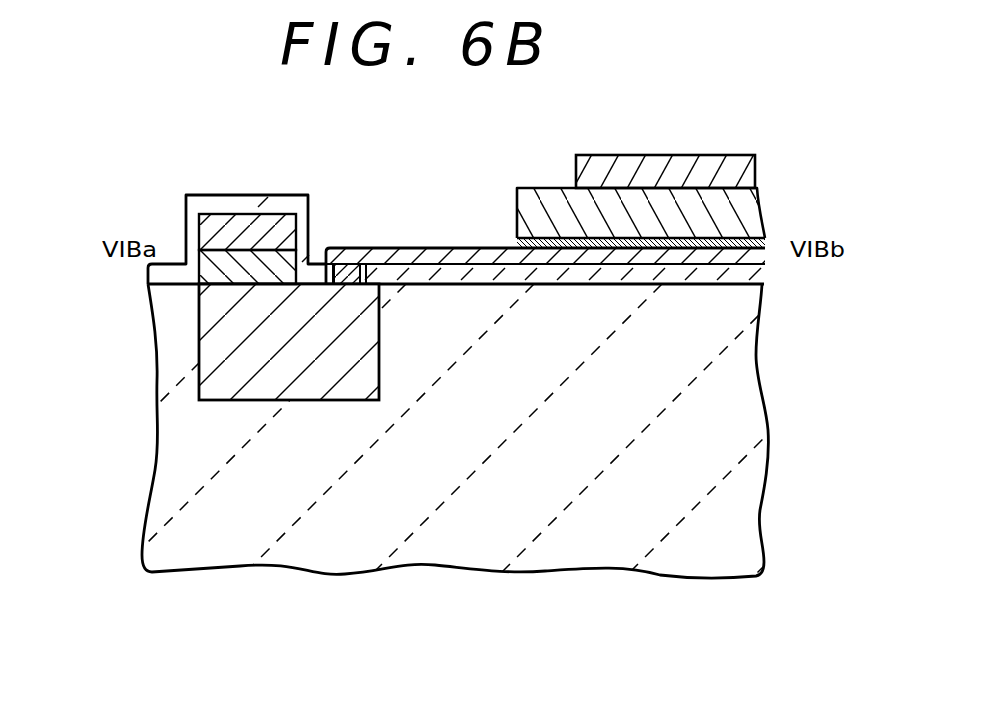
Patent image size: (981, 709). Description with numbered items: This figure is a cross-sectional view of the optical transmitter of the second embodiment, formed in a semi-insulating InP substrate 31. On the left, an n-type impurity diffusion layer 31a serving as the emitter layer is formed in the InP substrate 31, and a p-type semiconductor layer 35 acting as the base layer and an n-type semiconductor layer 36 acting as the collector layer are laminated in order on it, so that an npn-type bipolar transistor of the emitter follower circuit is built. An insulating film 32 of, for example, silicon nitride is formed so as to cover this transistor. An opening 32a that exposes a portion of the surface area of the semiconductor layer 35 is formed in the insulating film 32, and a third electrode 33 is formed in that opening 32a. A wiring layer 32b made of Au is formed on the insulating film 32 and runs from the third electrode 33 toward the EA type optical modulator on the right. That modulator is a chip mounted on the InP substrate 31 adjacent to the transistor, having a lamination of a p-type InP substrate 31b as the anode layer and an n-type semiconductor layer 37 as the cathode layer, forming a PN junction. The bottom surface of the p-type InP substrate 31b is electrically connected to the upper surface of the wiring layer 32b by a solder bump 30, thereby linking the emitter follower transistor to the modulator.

The solder bump 30 is at (515, 240).
The InP substrate 31 is at (764, 433).
The n-type impurity diffusion layer 31a is at (216, 338).
The p-type InP substrate 31b is at (552, 195).
The insulating film 32 is at (305, 212).
The opening 32a is at (357, 247).
The wiring layer 32b is at (434, 273).
The third electrode 33 is at (348, 268).
The p-type semiconductor layer 35 is at (237, 269).
The n-type semiconductor layer 36 is at (212, 228).
The n-type semiconductor layer 37 is at (638, 163).